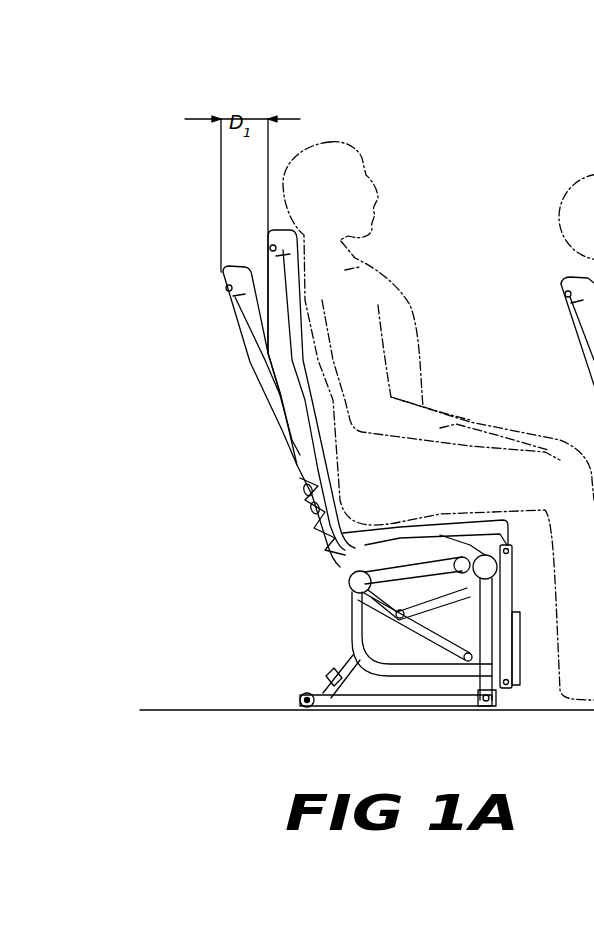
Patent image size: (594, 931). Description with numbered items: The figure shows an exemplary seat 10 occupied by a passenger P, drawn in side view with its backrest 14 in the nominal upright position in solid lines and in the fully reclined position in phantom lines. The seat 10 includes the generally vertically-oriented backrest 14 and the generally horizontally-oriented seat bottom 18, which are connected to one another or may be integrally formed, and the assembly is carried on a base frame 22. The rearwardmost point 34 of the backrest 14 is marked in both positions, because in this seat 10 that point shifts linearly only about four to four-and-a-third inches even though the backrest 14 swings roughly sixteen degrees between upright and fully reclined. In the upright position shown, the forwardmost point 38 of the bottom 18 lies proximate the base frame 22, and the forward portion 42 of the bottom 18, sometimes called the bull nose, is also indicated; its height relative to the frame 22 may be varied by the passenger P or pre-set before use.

The seat 10 is at (212, 562).
The backrest 14 is at (305, 484).
The seat bottom 18 is at (352, 578).
The base frame 22 is at (344, 637).
The rearwardmost point 34 is at (268, 247).
The forwardmost point 38 is at (512, 570).
The forward portion 42 is at (472, 525).
The passenger P is at (355, 143).